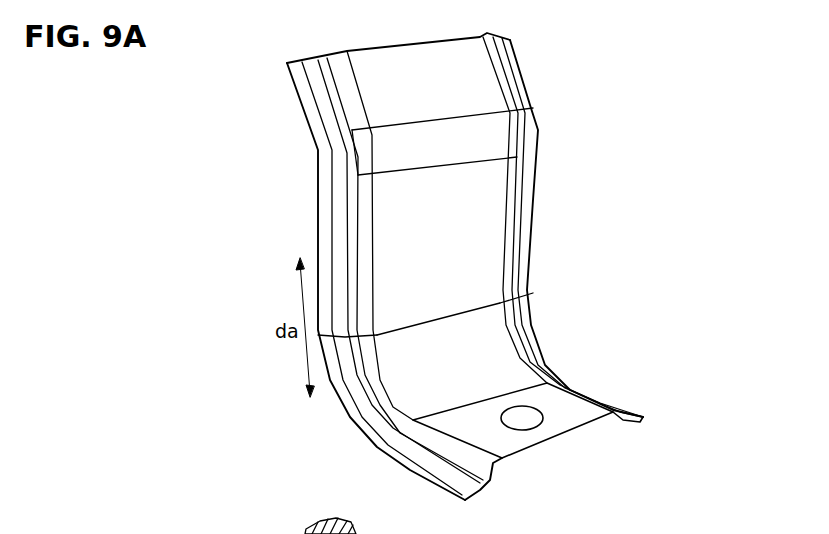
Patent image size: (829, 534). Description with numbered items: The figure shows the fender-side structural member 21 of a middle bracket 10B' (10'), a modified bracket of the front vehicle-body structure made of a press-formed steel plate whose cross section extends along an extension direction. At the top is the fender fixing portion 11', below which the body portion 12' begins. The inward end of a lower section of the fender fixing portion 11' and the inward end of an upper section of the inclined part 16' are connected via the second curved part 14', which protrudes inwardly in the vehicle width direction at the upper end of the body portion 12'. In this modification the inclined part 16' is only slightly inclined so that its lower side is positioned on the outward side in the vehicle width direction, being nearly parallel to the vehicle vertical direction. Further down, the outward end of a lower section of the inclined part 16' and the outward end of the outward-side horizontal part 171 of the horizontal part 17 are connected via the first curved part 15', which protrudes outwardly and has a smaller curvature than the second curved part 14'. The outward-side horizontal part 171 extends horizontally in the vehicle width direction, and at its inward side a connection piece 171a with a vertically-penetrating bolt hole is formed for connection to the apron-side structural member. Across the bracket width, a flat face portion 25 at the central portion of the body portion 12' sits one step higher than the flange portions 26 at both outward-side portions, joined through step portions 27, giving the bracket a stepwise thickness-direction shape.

The middle bracket 10B' is at (541, 269).
The bracket 10' is at (541, 269).
The fender fixing portion 11' is at (413, 28).
The body portion 12' is at (583, 270).
The second curved part 14' is at (473, 140).
The first curved part 15' is at (522, 327).
The inclined part 16' is at (483, 234).
The horizontal part 17 is at (363, 443).
The outward-side horizontal part 171 is at (394, 280).
The connection piece 171a is at (595, 408).
The fender-side structural member 21 is at (653, 200).
The flat face portion 25 is at (538, 451).
The flange portions 26 is at (455, 495).
The step portions 27 is at (490, 487).